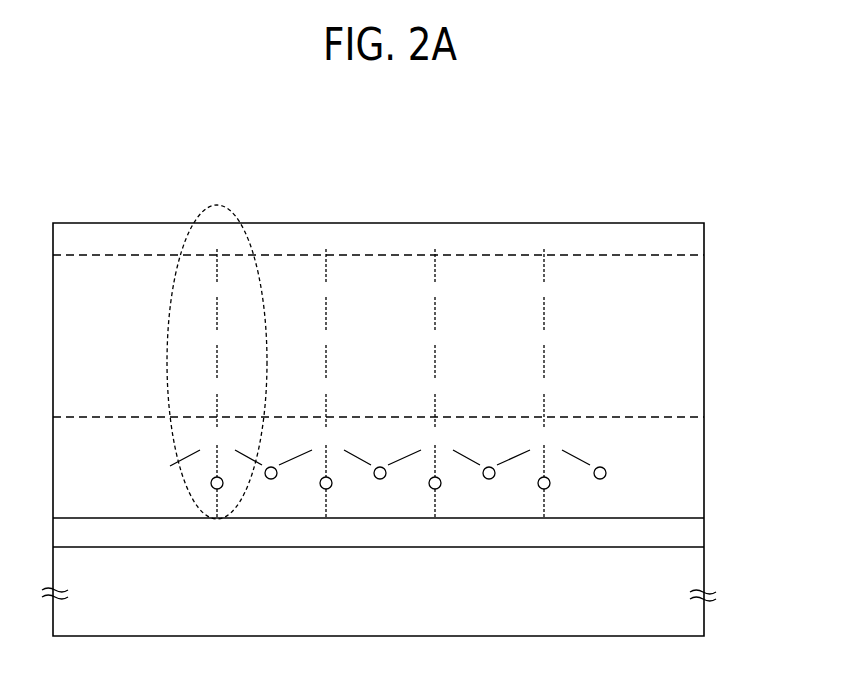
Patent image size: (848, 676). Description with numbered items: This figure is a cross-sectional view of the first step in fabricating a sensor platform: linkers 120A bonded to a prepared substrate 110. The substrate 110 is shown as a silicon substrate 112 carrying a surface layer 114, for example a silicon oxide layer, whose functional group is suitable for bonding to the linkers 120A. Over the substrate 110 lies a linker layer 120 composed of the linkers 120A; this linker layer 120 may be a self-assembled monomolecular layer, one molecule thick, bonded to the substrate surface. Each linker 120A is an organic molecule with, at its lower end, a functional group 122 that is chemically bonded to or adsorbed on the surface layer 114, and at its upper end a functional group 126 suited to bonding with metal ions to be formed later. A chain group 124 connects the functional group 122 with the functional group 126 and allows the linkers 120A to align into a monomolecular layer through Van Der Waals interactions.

The substrate 110 is at (766, 512).
The silicon substrate 112 is at (708, 566).
The surface layer 114 is at (708, 527).
The linker layer 120 is at (714, 432).
The linker 120A is at (210, 207).
The functional group 122 is at (93, 479).
The chain group 124 is at (93, 349).
The functional group 126 is at (93, 250).